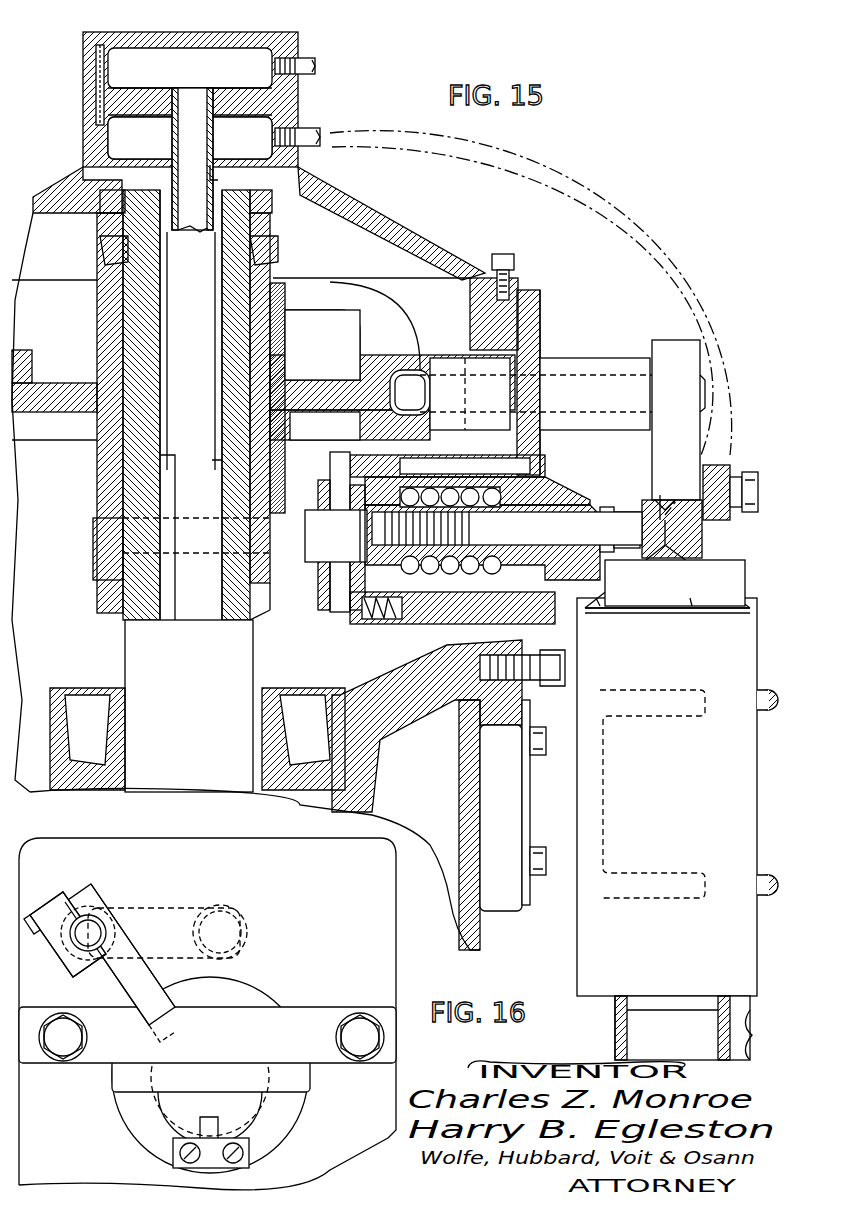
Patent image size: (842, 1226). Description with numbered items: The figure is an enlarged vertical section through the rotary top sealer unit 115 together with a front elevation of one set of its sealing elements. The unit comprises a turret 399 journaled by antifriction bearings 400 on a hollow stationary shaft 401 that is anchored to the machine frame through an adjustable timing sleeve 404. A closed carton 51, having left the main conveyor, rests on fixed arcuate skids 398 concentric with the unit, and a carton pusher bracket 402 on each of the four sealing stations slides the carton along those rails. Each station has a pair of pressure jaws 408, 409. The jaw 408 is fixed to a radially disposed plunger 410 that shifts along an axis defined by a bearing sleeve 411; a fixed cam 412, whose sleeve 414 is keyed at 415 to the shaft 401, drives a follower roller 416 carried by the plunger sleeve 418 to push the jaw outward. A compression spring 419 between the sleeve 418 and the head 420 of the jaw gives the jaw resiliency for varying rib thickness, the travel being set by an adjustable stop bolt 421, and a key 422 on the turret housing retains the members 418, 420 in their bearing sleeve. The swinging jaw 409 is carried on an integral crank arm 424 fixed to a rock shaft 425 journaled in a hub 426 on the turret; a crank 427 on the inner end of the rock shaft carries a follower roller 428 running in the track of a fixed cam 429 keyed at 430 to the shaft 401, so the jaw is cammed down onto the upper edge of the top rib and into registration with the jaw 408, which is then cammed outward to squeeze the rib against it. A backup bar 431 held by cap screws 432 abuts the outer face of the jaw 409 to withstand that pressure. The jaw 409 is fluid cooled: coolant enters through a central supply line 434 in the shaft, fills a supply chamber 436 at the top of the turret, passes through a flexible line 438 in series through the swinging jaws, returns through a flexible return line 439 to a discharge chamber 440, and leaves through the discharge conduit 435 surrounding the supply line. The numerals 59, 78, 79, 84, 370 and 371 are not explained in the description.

In FIG. 15, the closed carton 51 is at (755, 625).
In FIG. 15, the side plate 59 is at (586, 797).
In FIG. 15, the plate edge 78 is at (598, 598).
In FIG. 15, the bracket plate 79 is at (730, 600).
In FIG. 15, the plate edge 84 is at (692, 598).
In FIG. 15, the rotary top sealer unit 115 is at (590, 151).
In FIG. 15, the V-bracket 370 is at (630, 575).
In FIG. 15, the block 371 is at (712, 577).
In FIG. 15, the fixed arcuate skids 398 is at (704, 992).
In FIG. 15, the turret 399 is at (422, 246).
In FIG. 16, the turret 399 is at (305, 1153).
In FIG. 15, the antifriction bearings 400 is at (330, 690).
In FIG. 15, the stationary shaft 401 is at (162, 784).
In FIG. 15, the carton pusher bracket 402 is at (557, 900).
In FIG. 15, the adjustable timing sleeve 404 is at (158, 624).
In FIG. 15, the pressure jaw 408 is at (692, 526).
In FIG. 15, the swinging pressure jaw 409 is at (694, 545).
In FIG. 16, the swinging pressure jaw 409 is at (306, 1078).
In FIG. 15, the plunger 410 is at (586, 494).
In FIG. 16, the plunger 410 is at (257, 1118).
In FIG. 15, the bearing sleeve 411 is at (557, 470).
In FIG. 15, the fixed cam 412 is at (300, 539).
In FIG. 15, the cam sleeve 414 is at (284, 648).
In FIG. 15, the key 415 is at (266, 601).
In FIG. 15, the follower roller 416 is at (310, 505).
In FIG. 15, the plunger sleeve 418 is at (560, 490).
In FIG. 15, the compression spring 419 is at (507, 528).
In FIG. 15, the jaw head 420 is at (580, 506).
In FIG. 15, the adjustable stop bolt 421 is at (585, 526).
In FIG. 15, the key 422 is at (568, 610).
In FIG. 16, the key 422 is at (218, 1125).
In FIG. 15, the crank arm 424 is at (692, 424).
In FIG. 16, the crank arm 424 is at (142, 982).
In FIG. 15, the rock shaft 425 is at (600, 373).
In FIG. 16, the rock shaft 425 is at (98, 928).
In FIG. 15, the hub 426 is at (575, 358).
In FIG. 16, the hub 426 is at (126, 929).
In FIG. 15, the crank 427 is at (446, 364).
In FIG. 16, the crank 427 is at (178, 912).
In FIG. 15, the follower roller 428 is at (410, 372).
In FIG. 16, the follower roller 428 is at (244, 908).
In FIG. 15, the fixed cam 429 is at (418, 332).
In FIG. 15, the key 430 is at (268, 333).
In FIG. 15, the backup bar 431 is at (716, 470).
In FIG. 16, the backup bar 431 is at (318, 1015).
In FIG. 15, the cap screws 432 is at (748, 488).
In FIG. 16, the cap screws 432 is at (362, 1022).
In FIG. 15, the central coolant supply line 434 is at (190, 96).
In FIG. 15, the discharge conduit 435 is at (212, 163).
In FIG. 15, the coolant supply chamber 436 is at (108, 70).
In FIG. 15, the flexible supply line 438 is at (314, 64).
In FIG. 15, the flexible return line 439 is at (320, 134).
In FIG. 15, the discharge chamber 440 is at (115, 144).